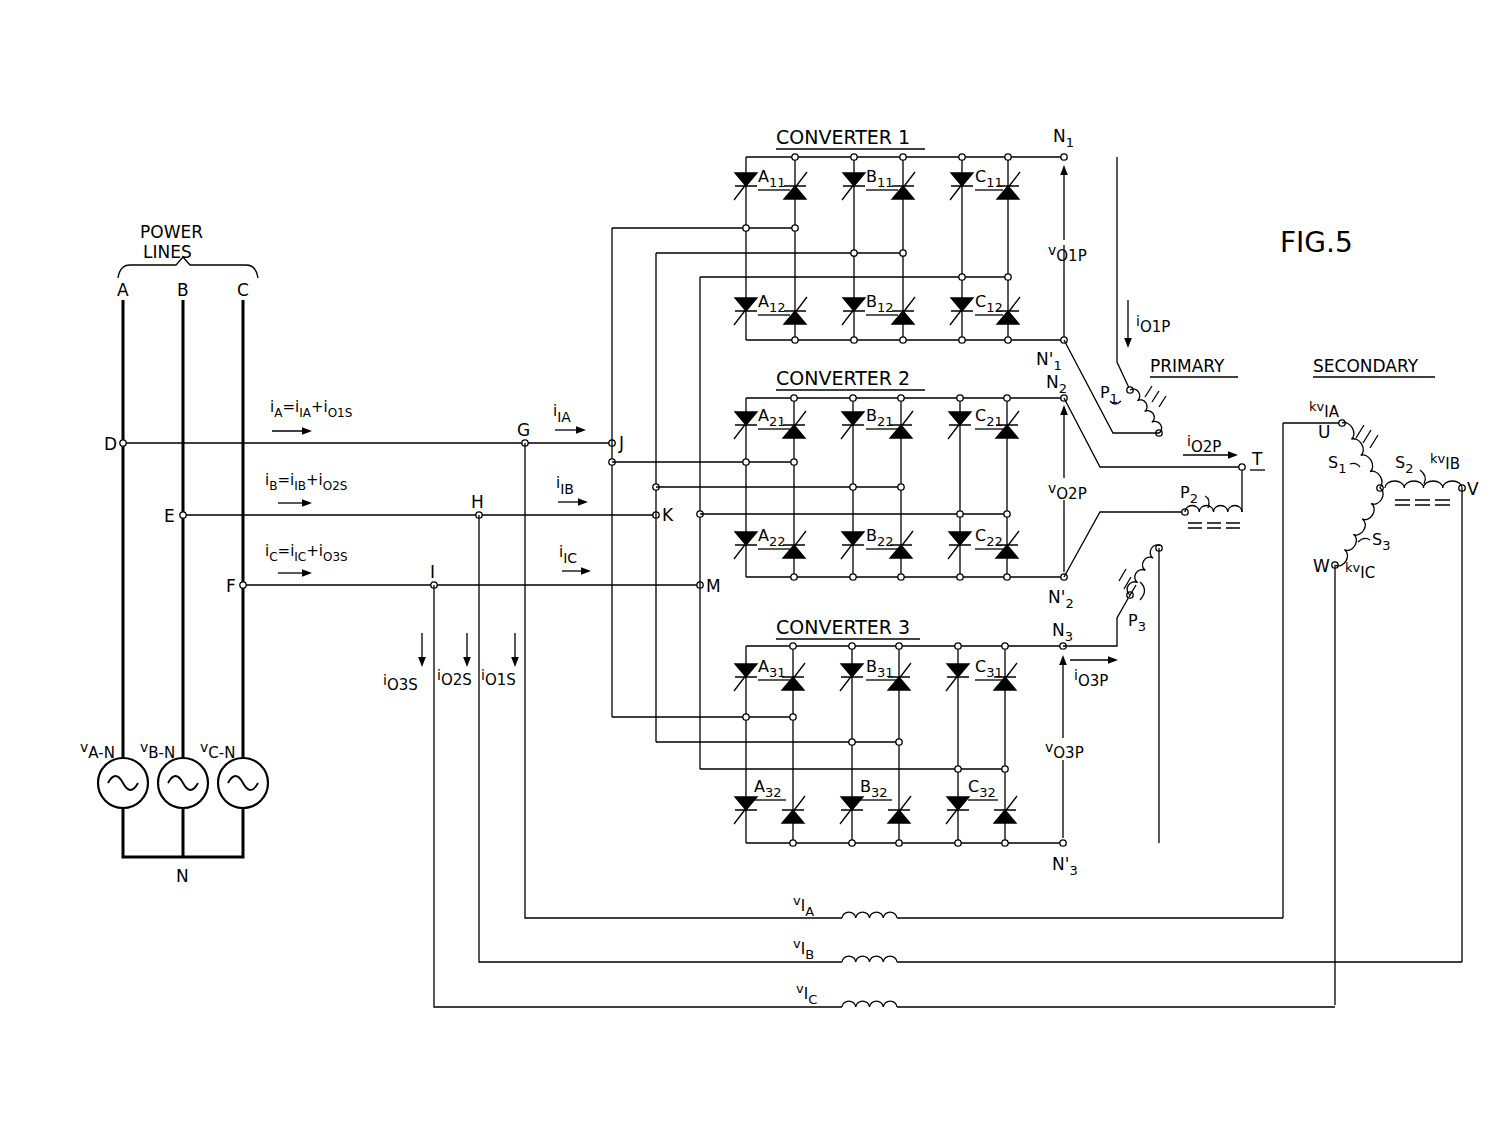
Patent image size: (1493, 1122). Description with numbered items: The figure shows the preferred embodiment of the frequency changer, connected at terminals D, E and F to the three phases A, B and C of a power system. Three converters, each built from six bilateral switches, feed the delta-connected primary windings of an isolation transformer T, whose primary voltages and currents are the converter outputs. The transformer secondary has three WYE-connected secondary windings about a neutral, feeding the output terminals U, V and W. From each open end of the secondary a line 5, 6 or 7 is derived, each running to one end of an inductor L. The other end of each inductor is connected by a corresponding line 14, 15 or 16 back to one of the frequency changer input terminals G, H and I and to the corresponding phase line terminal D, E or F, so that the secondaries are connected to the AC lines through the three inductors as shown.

The line 5 is at (1282, 731).
The line 6 is at (1461, 731).
The line 7 is at (1334, 731).
The line 14 is at (657, 918).
The line 15 is at (657, 962).
The line 16 is at (660, 1007).